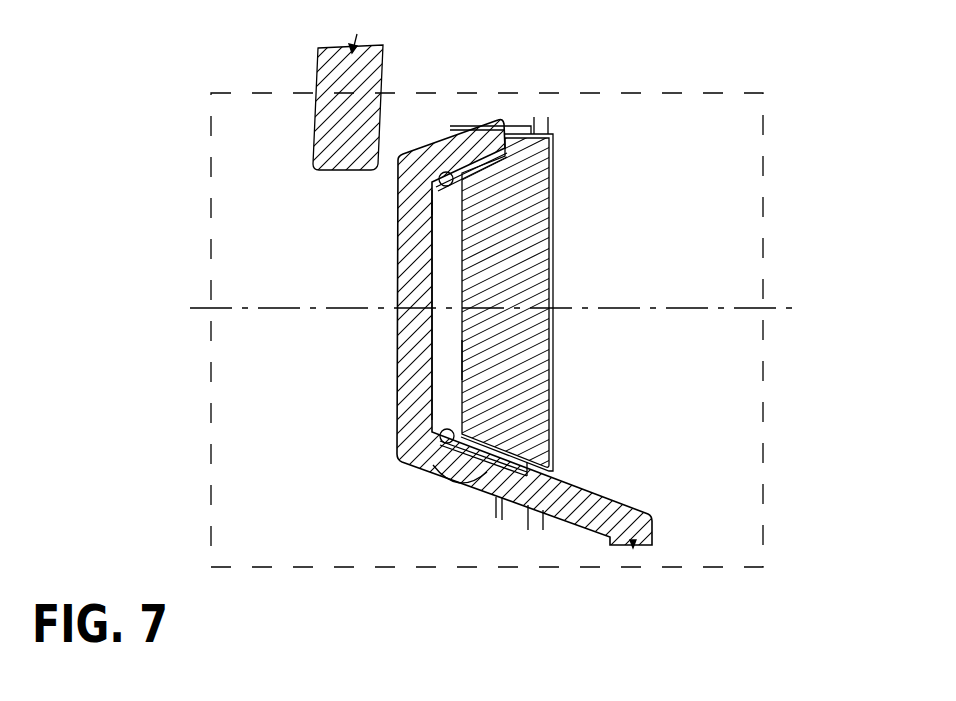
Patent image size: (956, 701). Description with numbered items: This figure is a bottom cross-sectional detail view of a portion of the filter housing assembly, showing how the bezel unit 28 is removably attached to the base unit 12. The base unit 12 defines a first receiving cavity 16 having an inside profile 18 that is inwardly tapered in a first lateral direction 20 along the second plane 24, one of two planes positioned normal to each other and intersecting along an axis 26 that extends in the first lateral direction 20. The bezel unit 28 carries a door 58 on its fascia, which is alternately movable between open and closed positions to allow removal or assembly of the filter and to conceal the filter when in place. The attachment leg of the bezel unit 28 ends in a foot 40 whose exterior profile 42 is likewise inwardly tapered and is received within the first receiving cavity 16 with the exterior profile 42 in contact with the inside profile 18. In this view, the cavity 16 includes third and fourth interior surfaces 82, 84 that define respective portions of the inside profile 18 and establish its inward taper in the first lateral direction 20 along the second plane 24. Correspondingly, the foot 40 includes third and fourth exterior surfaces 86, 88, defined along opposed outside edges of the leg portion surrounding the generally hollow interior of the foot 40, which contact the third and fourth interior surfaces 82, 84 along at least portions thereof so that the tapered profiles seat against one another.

The base unit 12 is at (385, 377).
The first receiving cavity 16 is at (443, 219).
The inside profile 18 is at (430, 203).
The first lateral direction 20 is at (680, 255).
The second plane 24 is at (764, 523).
The axis 26 is at (786, 312).
The bezel unit 28 is at (581, 259).
The foot 40 is at (549, 217).
The exterior profile 42 is at (464, 358).
The door 58 is at (563, 447).
The third interior surface 82 is at (447, 172).
The fourth interior surface 84 is at (433, 466).
The third exterior surface 86 is at (468, 481).
The fourth exterior surface 88 is at (483, 160).